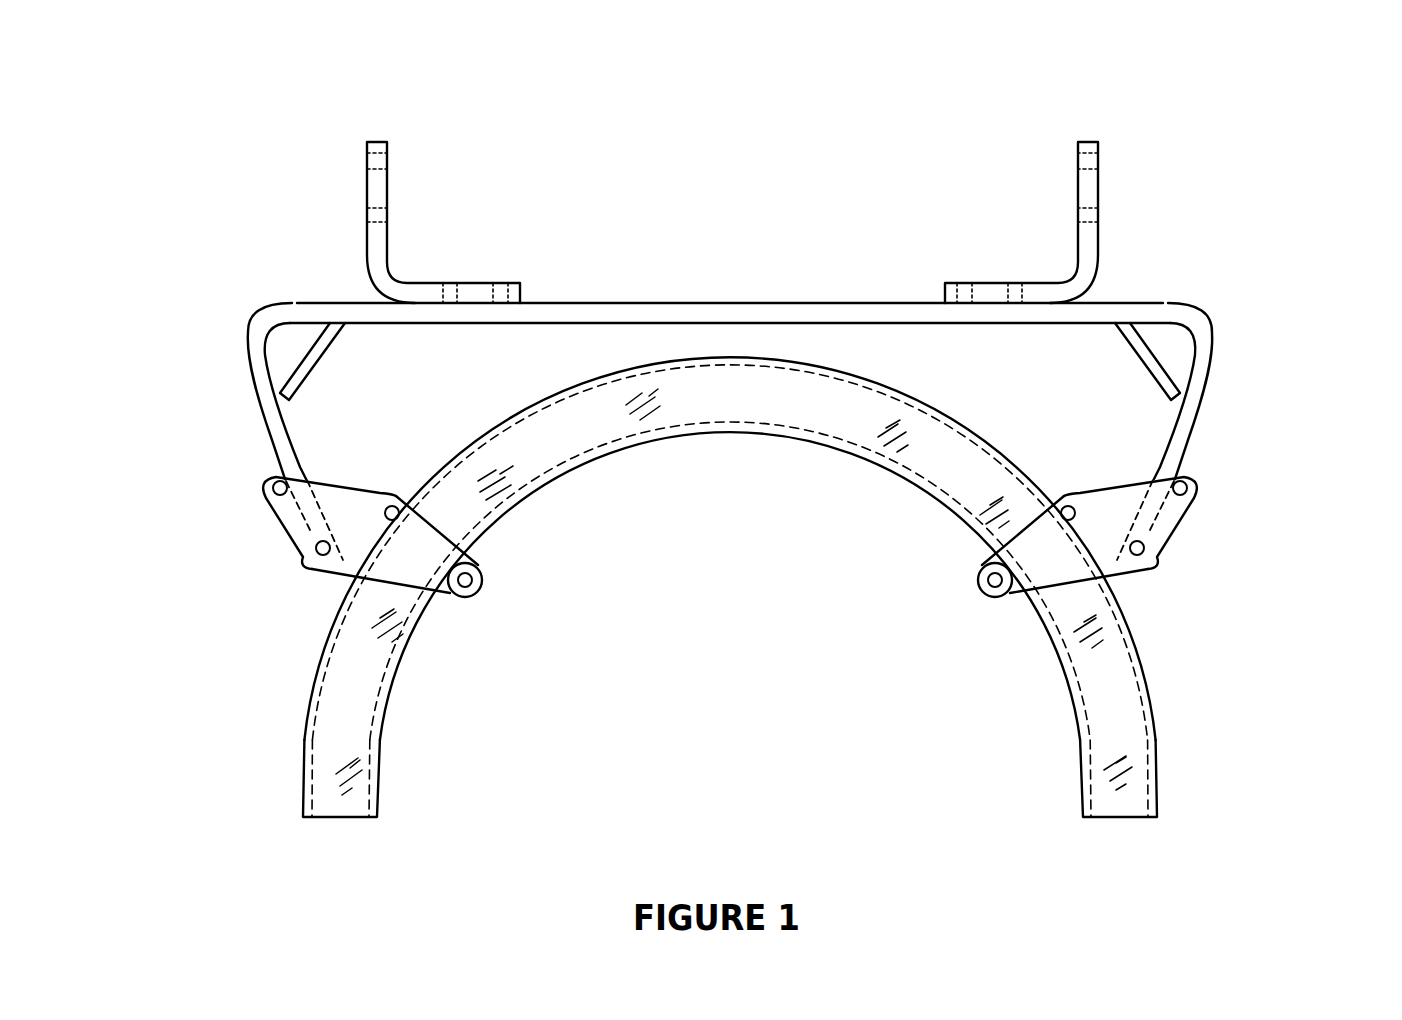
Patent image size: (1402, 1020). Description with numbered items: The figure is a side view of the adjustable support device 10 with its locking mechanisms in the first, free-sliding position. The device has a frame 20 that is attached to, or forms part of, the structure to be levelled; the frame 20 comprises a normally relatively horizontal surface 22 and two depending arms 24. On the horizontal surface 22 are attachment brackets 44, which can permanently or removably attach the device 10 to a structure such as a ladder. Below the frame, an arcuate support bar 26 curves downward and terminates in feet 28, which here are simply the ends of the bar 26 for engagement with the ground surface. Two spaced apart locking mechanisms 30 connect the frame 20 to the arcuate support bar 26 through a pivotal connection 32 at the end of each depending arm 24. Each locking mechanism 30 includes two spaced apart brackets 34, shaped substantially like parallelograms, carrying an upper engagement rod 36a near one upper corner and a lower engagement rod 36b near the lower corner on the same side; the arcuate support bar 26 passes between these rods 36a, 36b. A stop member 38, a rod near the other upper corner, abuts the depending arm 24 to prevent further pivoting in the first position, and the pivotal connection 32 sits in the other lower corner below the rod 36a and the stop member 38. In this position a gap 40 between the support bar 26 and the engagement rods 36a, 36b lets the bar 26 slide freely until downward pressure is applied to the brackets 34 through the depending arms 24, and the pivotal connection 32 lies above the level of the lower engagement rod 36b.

The adjustable support device 10 is at (247, 233).
The frame 20 is at (260, 322).
The horizontal surface 22 is at (728, 308).
The depending arms 24 is at (256, 402).
The arcuate support bar 26 is at (705, 403).
The feet 28 is at (335, 793).
The locking mechanisms 30 is at (257, 537).
The pivotal connection 32 is at (323, 557).
The brackets 34 is at (1047, 588).
The upper engagement rod 36a is at (388, 506).
The lower engagement rod 36b is at (473, 597).
The stop member 38 is at (268, 482).
The gap 40 is at (477, 553).
The brackets 44 is at (373, 187).